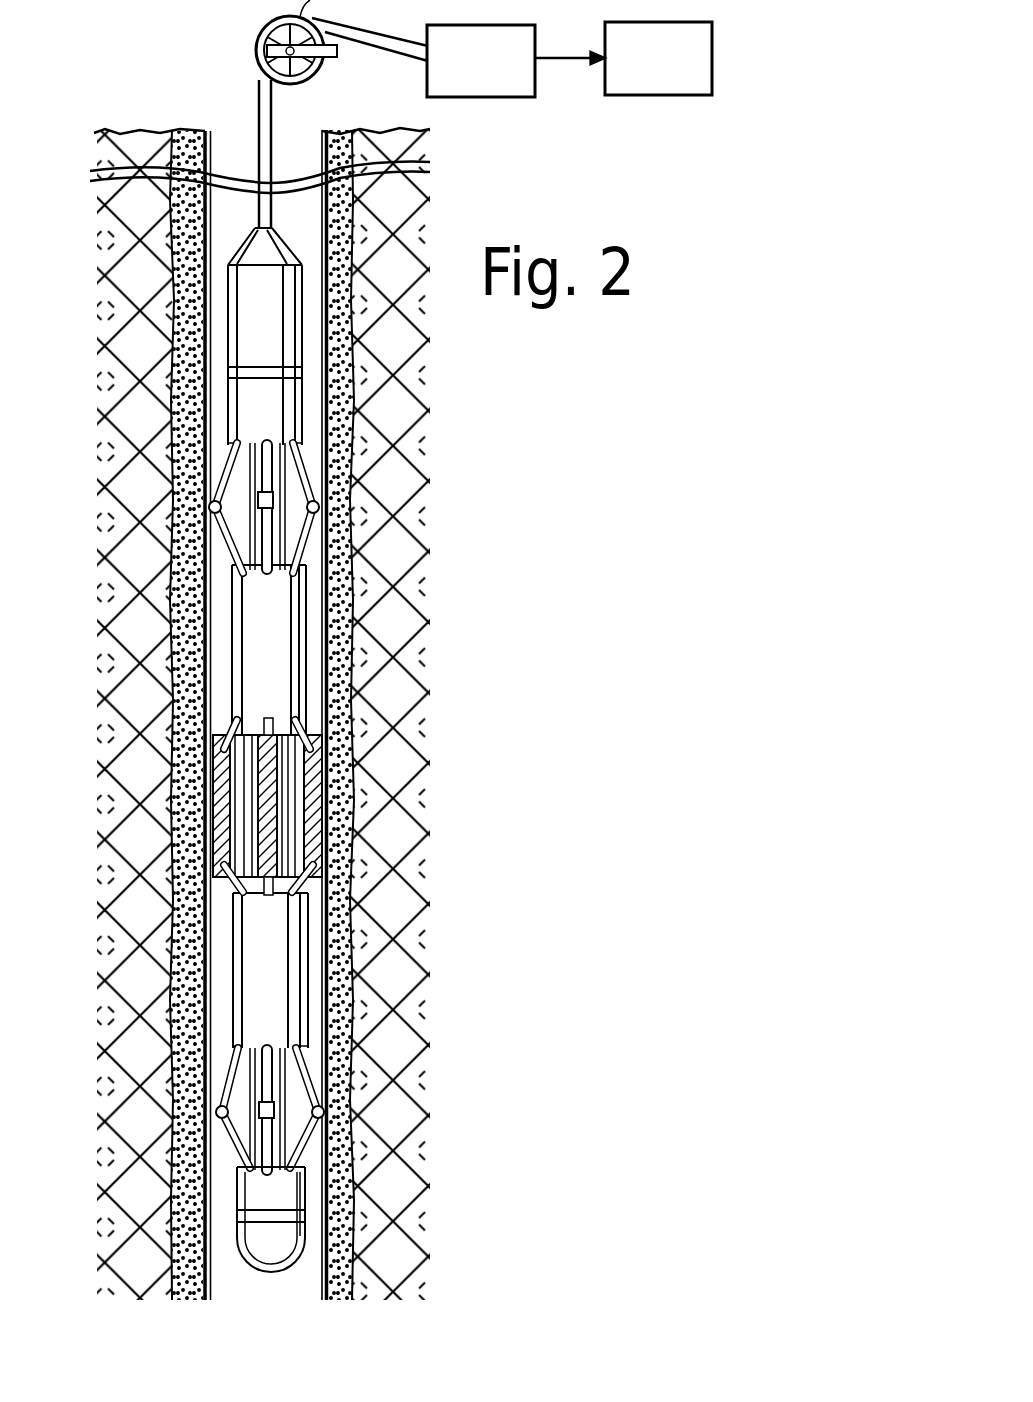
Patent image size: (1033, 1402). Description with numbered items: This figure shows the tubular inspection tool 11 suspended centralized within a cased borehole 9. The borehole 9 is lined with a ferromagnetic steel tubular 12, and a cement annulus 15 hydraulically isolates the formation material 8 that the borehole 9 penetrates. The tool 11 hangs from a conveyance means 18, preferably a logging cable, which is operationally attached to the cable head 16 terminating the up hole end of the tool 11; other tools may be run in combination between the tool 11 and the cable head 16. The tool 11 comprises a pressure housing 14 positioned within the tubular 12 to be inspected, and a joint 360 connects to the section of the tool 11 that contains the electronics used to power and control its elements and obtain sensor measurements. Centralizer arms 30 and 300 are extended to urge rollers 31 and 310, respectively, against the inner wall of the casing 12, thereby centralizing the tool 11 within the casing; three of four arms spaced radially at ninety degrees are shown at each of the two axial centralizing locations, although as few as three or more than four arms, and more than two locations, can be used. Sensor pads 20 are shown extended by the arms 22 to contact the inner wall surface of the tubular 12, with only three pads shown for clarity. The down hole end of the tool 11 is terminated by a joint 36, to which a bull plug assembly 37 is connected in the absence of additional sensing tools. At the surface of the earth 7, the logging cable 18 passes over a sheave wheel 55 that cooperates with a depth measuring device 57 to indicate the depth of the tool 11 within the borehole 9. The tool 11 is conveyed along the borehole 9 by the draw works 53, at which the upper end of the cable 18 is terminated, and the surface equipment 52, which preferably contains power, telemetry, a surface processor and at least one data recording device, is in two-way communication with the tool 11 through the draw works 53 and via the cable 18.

The surface of the earth 7 is at (395, 122).
The formation material 8 is at (426, 546).
The borehole 9 is at (228, 137).
The tubular inspection tool 11 is at (266, 980).
The ferromagnetic tubular 12 is at (327, 600).
The pressure housing 14 is at (300, 330).
The cement annulus 15 is at (335, 357).
The cable head 16 is at (240, 243).
The conveyance means 18 is at (366, 31).
The sensor pads 20 is at (271, 728).
The arms 22 is at (307, 730).
The centralizer arms 30 is at (290, 470).
The rollers 31 is at (320, 505).
The joint 36 is at (307, 1212).
The bull plug assembly 37 is at (305, 1258).
The surface equipment 52 is at (700, 85).
The draw works 53 is at (530, 90).
The sheave wheel 55 is at (256, 0).
The depth measuring device 57 is at (338, 56).
The centralizer arms 300 is at (310, 1075).
The rollers 310 is at (327, 1103).
The joint 360 is at (232, 372).